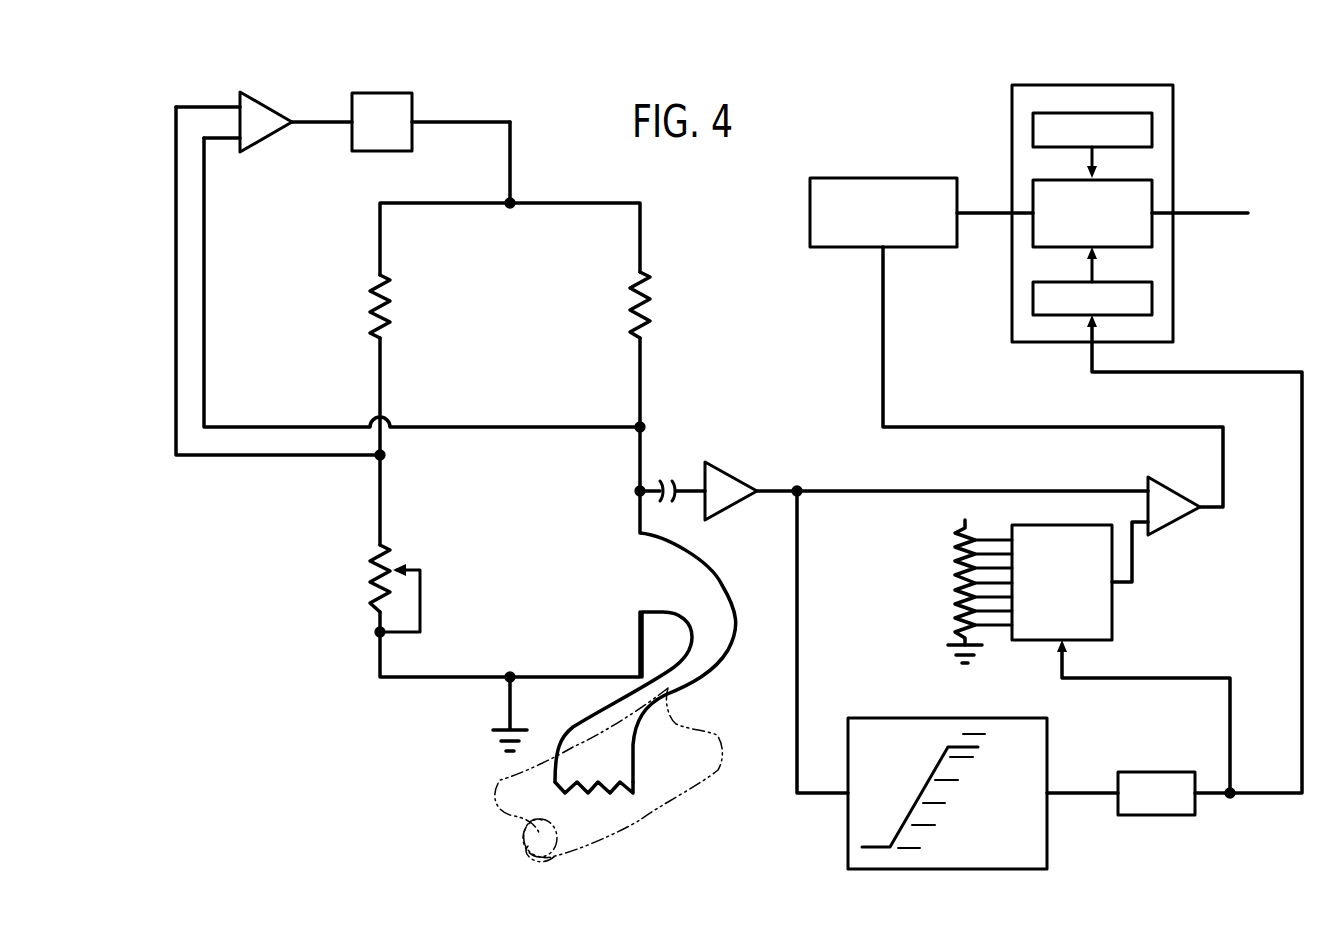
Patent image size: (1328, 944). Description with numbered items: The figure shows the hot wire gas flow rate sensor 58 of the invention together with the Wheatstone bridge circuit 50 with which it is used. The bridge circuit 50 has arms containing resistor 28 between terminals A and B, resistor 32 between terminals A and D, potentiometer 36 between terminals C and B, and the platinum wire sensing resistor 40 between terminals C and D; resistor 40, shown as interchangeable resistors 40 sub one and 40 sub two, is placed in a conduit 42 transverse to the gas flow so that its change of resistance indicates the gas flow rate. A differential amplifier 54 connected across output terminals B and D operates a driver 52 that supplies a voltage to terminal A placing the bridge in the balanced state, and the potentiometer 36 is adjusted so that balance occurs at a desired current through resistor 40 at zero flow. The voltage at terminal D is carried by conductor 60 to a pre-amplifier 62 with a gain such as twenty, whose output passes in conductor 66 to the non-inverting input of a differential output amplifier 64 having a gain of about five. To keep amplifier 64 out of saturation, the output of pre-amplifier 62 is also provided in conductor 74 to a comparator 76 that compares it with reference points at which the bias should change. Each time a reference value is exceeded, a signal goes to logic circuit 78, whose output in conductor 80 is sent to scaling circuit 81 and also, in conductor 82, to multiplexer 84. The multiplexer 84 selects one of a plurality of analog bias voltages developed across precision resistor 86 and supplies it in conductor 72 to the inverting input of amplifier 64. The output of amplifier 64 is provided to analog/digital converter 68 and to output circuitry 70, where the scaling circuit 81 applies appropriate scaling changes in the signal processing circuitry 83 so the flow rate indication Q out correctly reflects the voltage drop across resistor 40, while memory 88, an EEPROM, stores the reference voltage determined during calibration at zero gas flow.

The resistor 28 is at (372, 305).
The resistor 32 is at (651, 308).
The potentiometer 36 is at (370, 575).
The sensing resistor 40 is at (607, 790).
The conduit 42 is at (633, 810).
The bridge circuit 50 is at (711, 297).
The driver 52 is at (382, 93).
The differential amplifier 54 is at (273, 103).
The gas flow rate sensor 58 is at (843, 327).
The conductor 60 is at (690, 488).
The pre-amplifier 62 is at (732, 507).
The differential output amplifier 64 is at (1175, 477).
The conductor 66 is at (858, 489).
The analog/digital converter 68 is at (810, 210).
The output circuitry 70 is at (1175, 153).
The conductor 72 is at (1132, 560).
The conductor 74 is at (797, 728).
The comparator 76 is at (900, 718).
The logic circuit 78 is at (1155, 815).
The conductor 80 is at (1245, 372).
The scaling circuit 81 is at (1152, 295).
The conductor 82 is at (1148, 680).
The signal processing circuitry 83 is at (1033, 228).
The multiplexer 84 is at (1112, 605).
The precision resistor 86 is at (958, 580).
The memory 88 is at (1033, 128).